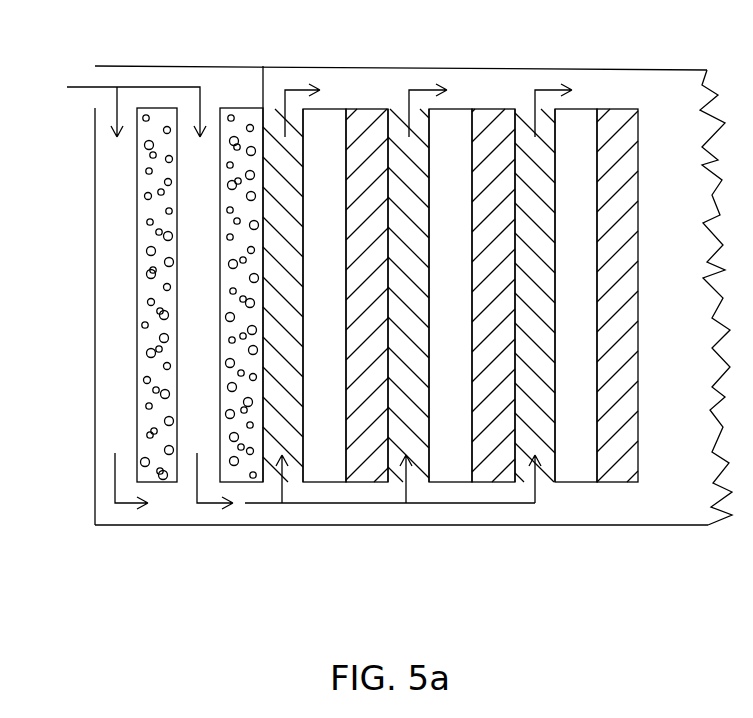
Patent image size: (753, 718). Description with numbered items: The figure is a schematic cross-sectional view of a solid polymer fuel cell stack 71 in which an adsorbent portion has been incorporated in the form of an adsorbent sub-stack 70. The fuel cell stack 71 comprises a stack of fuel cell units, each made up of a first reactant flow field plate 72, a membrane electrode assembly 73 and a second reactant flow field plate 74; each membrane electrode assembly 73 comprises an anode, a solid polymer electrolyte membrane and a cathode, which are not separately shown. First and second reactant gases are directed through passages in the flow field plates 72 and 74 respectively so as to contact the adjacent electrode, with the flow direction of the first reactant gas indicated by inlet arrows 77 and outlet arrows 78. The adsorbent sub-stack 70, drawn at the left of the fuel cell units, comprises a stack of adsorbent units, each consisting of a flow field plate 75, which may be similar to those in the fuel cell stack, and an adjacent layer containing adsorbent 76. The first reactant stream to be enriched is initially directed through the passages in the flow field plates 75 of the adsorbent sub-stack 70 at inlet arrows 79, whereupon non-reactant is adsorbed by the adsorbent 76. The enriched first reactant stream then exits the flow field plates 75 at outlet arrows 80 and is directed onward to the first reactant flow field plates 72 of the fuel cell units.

The adsorbent sub-stack 70 is at (75, 504).
The fuel cell stack 71 is at (631, 48).
The first reactant flow field plate 72 is at (538, 440).
The membrane electrode assembly 73 is at (578, 208).
The second reactant flow field plate 74 is at (365, 318).
The flow field plate 75 is at (198, 287).
The adsorbent 76 is at (240, 362).
The inlet arrows 77 is at (357, 510).
The outlet arrows 78 is at (427, 90).
The inlet arrows 79 is at (158, 85).
The outlet arrows 80 is at (207, 505).